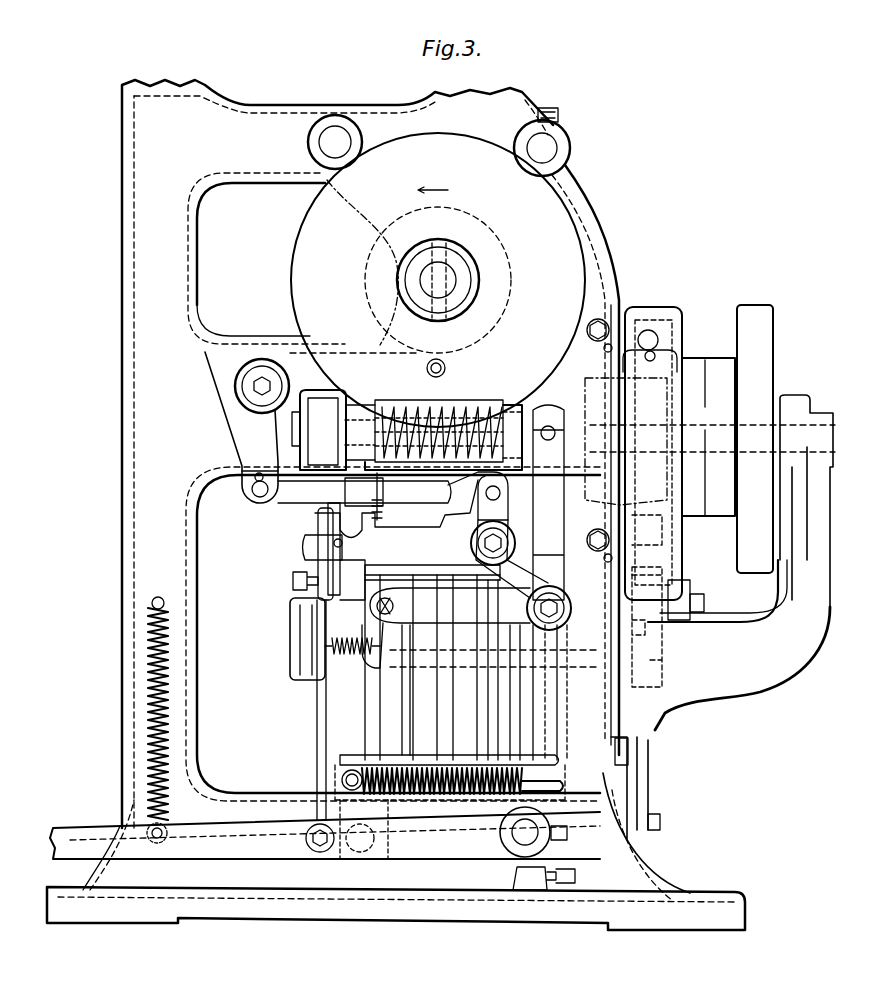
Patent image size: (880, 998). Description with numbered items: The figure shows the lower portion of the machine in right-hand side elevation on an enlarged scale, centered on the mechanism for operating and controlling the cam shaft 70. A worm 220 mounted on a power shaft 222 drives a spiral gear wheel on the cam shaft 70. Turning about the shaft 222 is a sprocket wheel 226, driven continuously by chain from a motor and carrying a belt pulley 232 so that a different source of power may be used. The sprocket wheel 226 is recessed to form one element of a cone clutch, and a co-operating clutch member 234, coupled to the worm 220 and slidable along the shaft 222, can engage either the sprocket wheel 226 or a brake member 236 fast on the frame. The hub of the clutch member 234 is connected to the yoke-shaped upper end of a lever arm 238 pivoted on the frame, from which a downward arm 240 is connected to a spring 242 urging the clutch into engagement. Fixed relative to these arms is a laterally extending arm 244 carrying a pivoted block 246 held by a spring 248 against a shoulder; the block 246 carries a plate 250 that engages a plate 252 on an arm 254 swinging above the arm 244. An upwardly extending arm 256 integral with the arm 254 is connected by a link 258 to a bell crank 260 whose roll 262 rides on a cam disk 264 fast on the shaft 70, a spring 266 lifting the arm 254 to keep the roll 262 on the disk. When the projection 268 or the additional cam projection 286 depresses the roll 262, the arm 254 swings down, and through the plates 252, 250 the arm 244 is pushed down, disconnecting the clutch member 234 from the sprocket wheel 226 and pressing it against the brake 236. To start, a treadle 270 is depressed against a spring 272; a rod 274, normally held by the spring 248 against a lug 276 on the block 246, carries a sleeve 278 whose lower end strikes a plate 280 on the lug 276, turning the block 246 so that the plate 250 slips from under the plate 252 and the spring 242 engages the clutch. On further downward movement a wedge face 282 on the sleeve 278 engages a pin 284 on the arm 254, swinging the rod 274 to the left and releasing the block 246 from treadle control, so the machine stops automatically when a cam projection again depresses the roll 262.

The cam shaft 70 is at (450, 281).
The worm 220 is at (468, 410).
The power shaft 222 is at (282, 433).
The sprocket wheel 226 is at (652, 536).
The belt pulley 232 is at (713, 362).
The clutch member 234 is at (660, 405).
The brake member 236 is at (588, 356).
The lever arm 238 is at (621, 488).
The arm 240 is at (600, 673).
The spring 242 is at (455, 792).
The laterally extending arm 244 is at (470, 608).
The block 246 is at (354, 658).
The spring 248 is at (340, 672).
The plate 250 is at (385, 585).
The plate 252 is at (400, 590).
The arm 254 is at (335, 580).
The upwardly extending arm 256 is at (505, 513).
The link 258 is at (256, 506).
The bell crank 260 is at (233, 366).
The roll 262 is at (447, 406).
The cam disk 264 is at (498, 234).
The spring 266 is at (372, 511).
The projection 268 is at (425, 362).
The treadle 270 is at (325, 835).
The spring 272 is at (150, 725).
The rod 274 is at (316, 742).
The lug 276 is at (340, 650).
The sleeve 278 is at (345, 600).
The plate 280 is at (345, 623).
The wedge face 282 is at (352, 538).
The pin 284 is at (330, 562).
The cam projection 286 is at (508, 313).